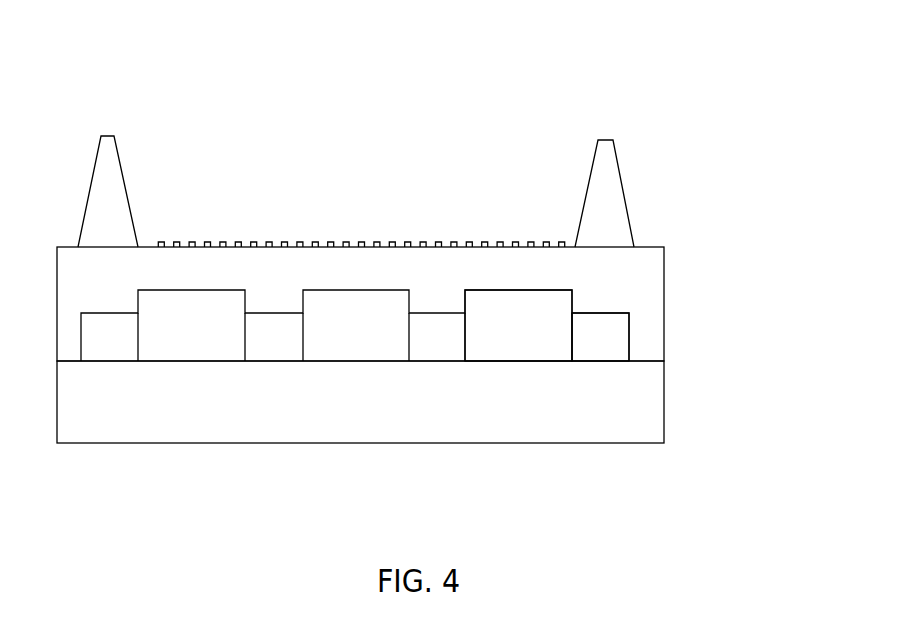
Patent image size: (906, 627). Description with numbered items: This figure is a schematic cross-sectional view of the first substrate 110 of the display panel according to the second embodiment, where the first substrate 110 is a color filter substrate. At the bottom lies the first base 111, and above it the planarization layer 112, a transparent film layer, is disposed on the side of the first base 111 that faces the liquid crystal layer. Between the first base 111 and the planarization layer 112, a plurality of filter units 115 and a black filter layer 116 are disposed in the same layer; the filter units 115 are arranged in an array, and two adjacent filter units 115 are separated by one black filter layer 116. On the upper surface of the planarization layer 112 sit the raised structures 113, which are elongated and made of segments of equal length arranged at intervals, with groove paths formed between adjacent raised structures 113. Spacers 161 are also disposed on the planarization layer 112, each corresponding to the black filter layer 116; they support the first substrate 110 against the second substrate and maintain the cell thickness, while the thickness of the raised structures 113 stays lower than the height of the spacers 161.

The first substrate 110 is at (383, 62).
The first base 111 is at (653, 387).
The planarization layer 112 is at (647, 293).
The raised structures 113 is at (487, 244).
The filter units 115 is at (516, 337).
The black filter layer 116 is at (602, 340).
The spacers 161 is at (602, 182).